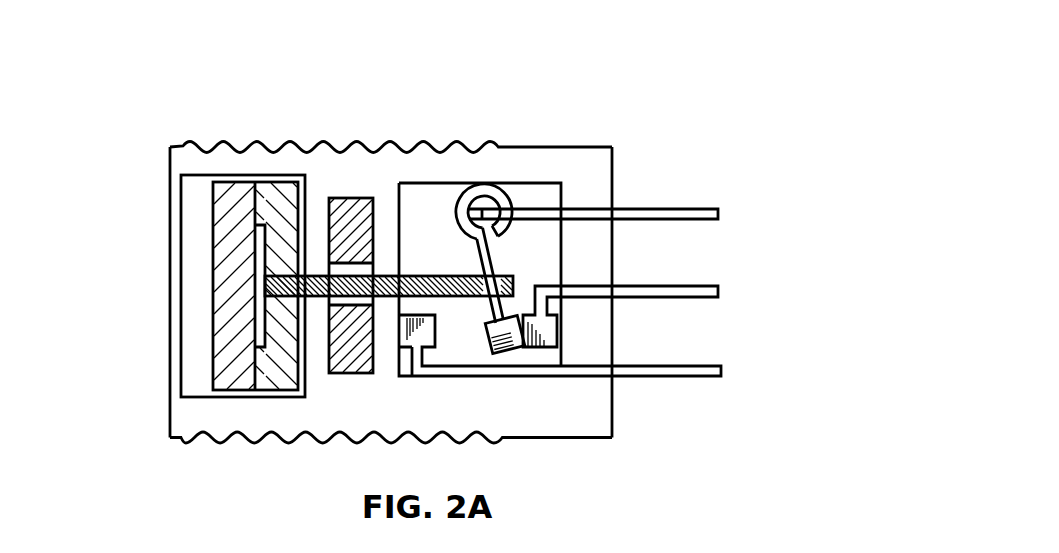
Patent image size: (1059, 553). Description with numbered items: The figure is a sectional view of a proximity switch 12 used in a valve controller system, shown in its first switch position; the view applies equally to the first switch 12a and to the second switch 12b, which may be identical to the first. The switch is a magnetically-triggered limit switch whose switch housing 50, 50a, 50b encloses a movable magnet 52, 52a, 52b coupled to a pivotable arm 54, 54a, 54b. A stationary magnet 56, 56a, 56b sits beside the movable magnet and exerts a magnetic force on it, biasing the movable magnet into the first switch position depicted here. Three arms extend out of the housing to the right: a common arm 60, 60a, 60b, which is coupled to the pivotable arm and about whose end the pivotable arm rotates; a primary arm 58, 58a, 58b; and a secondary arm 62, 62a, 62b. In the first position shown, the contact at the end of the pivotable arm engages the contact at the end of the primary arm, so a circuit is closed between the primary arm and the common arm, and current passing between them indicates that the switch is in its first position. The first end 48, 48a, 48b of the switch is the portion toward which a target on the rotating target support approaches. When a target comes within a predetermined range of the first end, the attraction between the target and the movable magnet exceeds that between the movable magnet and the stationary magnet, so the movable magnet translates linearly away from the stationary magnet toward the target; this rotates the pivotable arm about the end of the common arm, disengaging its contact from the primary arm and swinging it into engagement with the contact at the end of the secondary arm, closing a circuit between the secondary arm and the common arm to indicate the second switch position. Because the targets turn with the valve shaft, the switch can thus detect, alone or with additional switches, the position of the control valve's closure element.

The switch 12 is at (322, 254).
The first switch 12a is at (322, 254).
The second switch 12b is at (166, 104).
The first end 48 is at (243, 221).
The first end of the first switch 48a is at (243, 221).
The first end of the second switch 48b is at (223, 142).
The switch housing 50 is at (389, 158).
The switch housing 50a is at (389, 158).
The switch housing 50b is at (307, 148).
The movable magnet 52 is at (169, 286).
The movable magnet 52a is at (169, 286).
The movable magnet 52b is at (223, 315).
The pivotable arm 54 is at (485, 208).
The pivotable arm 54a is at (485, 208).
The pivotable arm 54b is at (472, 254).
The stationary magnet 56 is at (382, 215).
The stationary magnet 56a is at (382, 215).
The stationary magnet 56b is at (352, 198).
The primary arm 58 is at (650, 292).
The primary arm 58a is at (650, 292).
The primary arm 58b is at (697, 286).
The common arm 60 is at (605, 183).
The common arm 60a is at (605, 183).
The common arm 60b is at (654, 208).
The secondary arm 62 is at (580, 305).
The secondary arm 62a is at (580, 305).
The secondary arm 62b is at (653, 379).